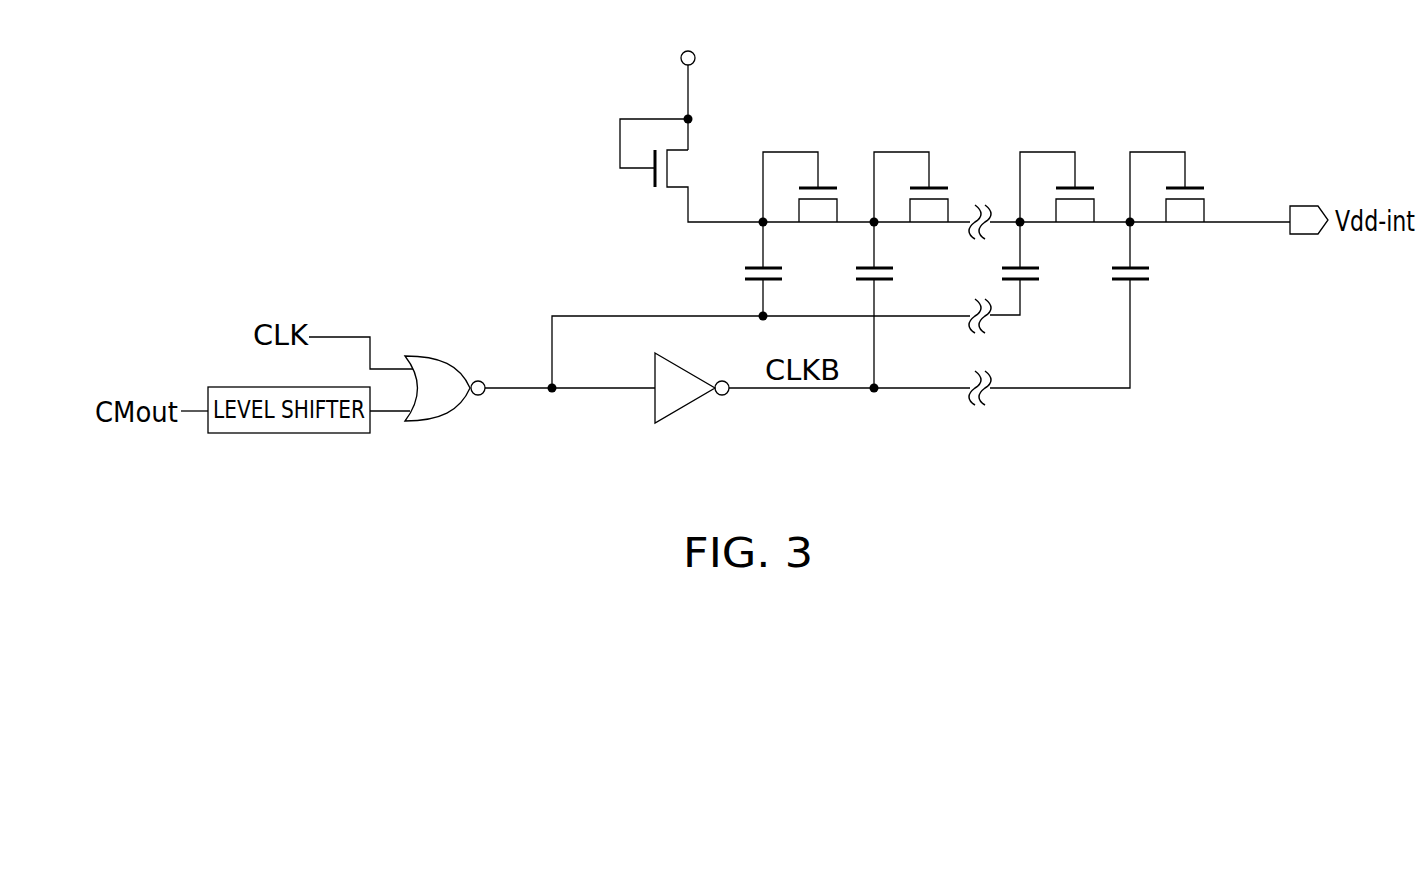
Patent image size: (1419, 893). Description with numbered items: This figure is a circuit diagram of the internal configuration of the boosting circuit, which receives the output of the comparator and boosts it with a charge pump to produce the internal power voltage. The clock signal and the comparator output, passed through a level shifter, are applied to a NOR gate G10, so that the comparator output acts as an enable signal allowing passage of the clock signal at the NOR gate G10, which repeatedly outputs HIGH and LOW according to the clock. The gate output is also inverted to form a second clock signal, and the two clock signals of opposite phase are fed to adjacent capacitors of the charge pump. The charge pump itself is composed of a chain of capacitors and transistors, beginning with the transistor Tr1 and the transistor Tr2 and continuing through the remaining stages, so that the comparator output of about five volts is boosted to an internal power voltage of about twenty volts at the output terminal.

The NOR gate G10 is at (428, 355).
The transistor Tr1 is at (799, 204).
The transistor Tr2 is at (910, 204).